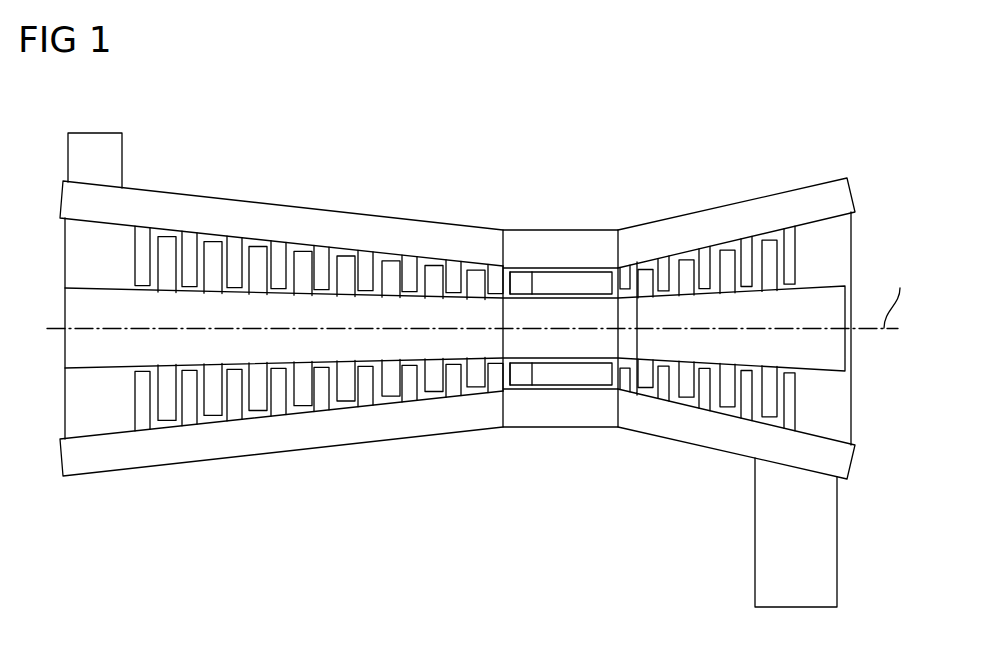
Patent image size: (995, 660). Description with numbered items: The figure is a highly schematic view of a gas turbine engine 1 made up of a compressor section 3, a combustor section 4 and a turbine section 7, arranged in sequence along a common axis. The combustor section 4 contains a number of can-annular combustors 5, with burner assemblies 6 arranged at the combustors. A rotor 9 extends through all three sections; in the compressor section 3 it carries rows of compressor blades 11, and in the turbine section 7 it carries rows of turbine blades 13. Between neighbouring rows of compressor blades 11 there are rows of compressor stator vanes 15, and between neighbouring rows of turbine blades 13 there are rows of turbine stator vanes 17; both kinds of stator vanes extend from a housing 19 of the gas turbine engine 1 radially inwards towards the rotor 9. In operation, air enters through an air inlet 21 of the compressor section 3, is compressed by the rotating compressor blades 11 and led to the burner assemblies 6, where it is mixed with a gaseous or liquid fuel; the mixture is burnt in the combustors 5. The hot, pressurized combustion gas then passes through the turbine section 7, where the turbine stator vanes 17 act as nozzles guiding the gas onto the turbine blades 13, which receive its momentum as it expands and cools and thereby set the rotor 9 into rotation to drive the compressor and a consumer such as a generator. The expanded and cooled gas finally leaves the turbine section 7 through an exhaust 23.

The gas turbine engine 1 is at (793, 106).
The compressor section 3 is at (257, 162).
The combustor section 4 is at (553, 201).
The can-annular combustor 5 is at (577, 283).
The burner assembly 6 is at (522, 285).
The turbine section 7 is at (711, 177).
The rotor 9 is at (73, 312).
The compressor blade 11 is at (170, 417).
The turbine blade 13 is at (687, 392).
The compressor stator vane 15 is at (192, 375).
The turbine stator vane 17 is at (710, 272).
The housing 19 is at (830, 190).
The air inlet 21 is at (112, 158).
The exhaust 23 is at (827, 542).